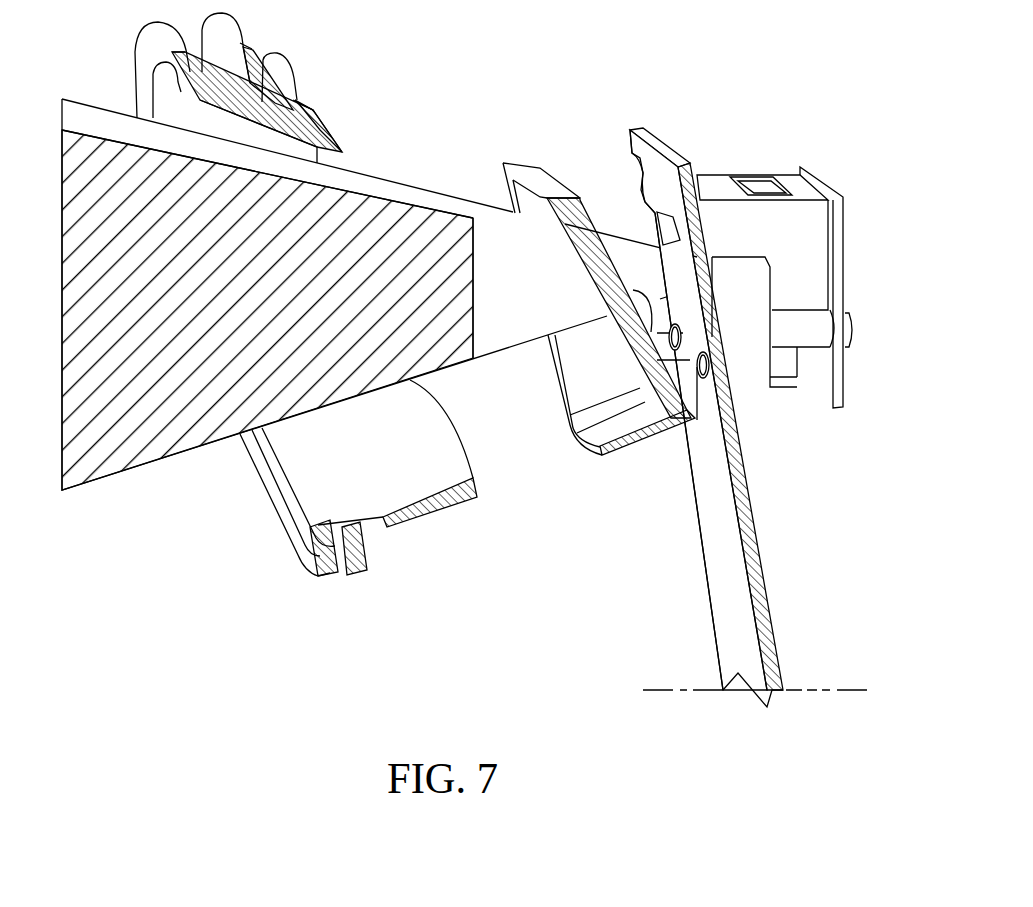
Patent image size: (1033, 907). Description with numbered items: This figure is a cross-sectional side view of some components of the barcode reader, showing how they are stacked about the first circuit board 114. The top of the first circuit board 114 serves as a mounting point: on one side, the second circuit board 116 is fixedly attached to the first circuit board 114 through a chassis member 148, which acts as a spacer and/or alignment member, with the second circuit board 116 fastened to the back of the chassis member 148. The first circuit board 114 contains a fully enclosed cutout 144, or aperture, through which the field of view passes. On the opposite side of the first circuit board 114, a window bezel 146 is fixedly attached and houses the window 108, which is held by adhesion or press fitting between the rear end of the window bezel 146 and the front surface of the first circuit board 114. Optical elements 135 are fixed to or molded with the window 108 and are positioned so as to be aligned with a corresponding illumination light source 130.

The window 108 is at (633, 325).
The first circuit board 114 is at (750, 525).
The second circuit board 116 is at (840, 265).
The illumination light source 130 is at (725, 333).
The optical element 135 is at (630, 293).
The cutout 144 is at (652, 234).
The window bezel 146 is at (627, 458).
The chassis member 148 is at (793, 222).